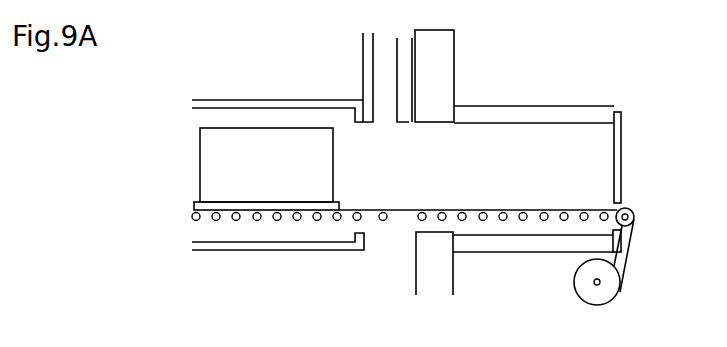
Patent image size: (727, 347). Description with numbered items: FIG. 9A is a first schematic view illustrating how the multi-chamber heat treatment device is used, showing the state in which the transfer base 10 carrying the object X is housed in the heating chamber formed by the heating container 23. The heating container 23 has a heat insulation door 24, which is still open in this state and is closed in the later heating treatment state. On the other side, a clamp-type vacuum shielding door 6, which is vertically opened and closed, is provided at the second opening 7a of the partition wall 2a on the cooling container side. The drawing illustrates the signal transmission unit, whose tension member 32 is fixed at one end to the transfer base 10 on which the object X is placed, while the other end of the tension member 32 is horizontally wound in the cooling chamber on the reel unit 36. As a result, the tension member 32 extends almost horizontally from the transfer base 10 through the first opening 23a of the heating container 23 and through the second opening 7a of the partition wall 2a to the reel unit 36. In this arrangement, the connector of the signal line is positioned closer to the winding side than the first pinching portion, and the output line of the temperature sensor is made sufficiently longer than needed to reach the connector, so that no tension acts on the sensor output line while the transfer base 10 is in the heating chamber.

The heating container 23 is at (268, 105).
The heat insulation door 24 is at (373, 83).
The vacuum shielding door 6 is at (405, 113).
The object X is at (272, 180).
The transfer base 10 is at (247, 205).
The tension member 32 is at (501, 206).
The first opening 23a is at (383, 184).
The second opening 7a is at (450, 184).
The partition wall 2a is at (426, 273).
The reel unit 36 is at (608, 292).